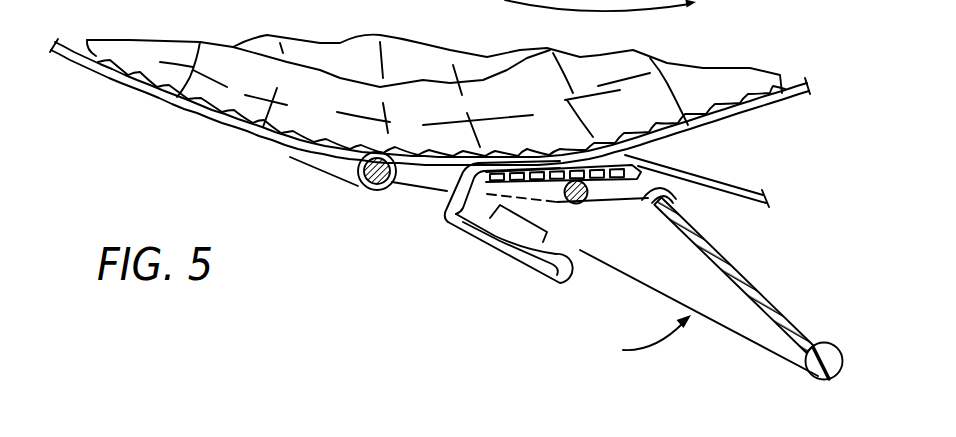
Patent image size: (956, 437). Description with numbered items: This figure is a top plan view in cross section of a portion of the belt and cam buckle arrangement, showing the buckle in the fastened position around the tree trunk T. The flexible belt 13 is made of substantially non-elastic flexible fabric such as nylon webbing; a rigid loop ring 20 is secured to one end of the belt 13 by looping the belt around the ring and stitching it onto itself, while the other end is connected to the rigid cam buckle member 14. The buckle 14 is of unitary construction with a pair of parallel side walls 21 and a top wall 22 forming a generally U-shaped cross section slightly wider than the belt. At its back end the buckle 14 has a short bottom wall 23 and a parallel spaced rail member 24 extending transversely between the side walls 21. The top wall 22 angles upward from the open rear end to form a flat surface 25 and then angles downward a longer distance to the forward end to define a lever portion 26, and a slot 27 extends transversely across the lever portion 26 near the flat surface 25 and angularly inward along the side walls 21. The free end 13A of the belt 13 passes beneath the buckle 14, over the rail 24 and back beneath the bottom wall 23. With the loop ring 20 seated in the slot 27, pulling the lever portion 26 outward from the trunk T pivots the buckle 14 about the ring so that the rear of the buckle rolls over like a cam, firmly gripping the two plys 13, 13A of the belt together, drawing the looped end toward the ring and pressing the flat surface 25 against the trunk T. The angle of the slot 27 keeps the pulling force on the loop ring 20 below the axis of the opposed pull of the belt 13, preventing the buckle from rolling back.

The tree trunk T is at (313, 47).
The flexible belt 13 is at (178, 111).
The free end of the belt 13A is at (738, 183).
The cam buckle member 14 is at (640, 338).
The loop ring 20 is at (415, 180).
The side walls 21 is at (752, 333).
The top wall 22 is at (760, 274).
The bottom wall 23 is at (468, 232).
The rail member 24 is at (540, 280).
The flat surface 25 is at (540, 172).
The lever portion 26 is at (800, 313).
The slot 27 is at (673, 198).